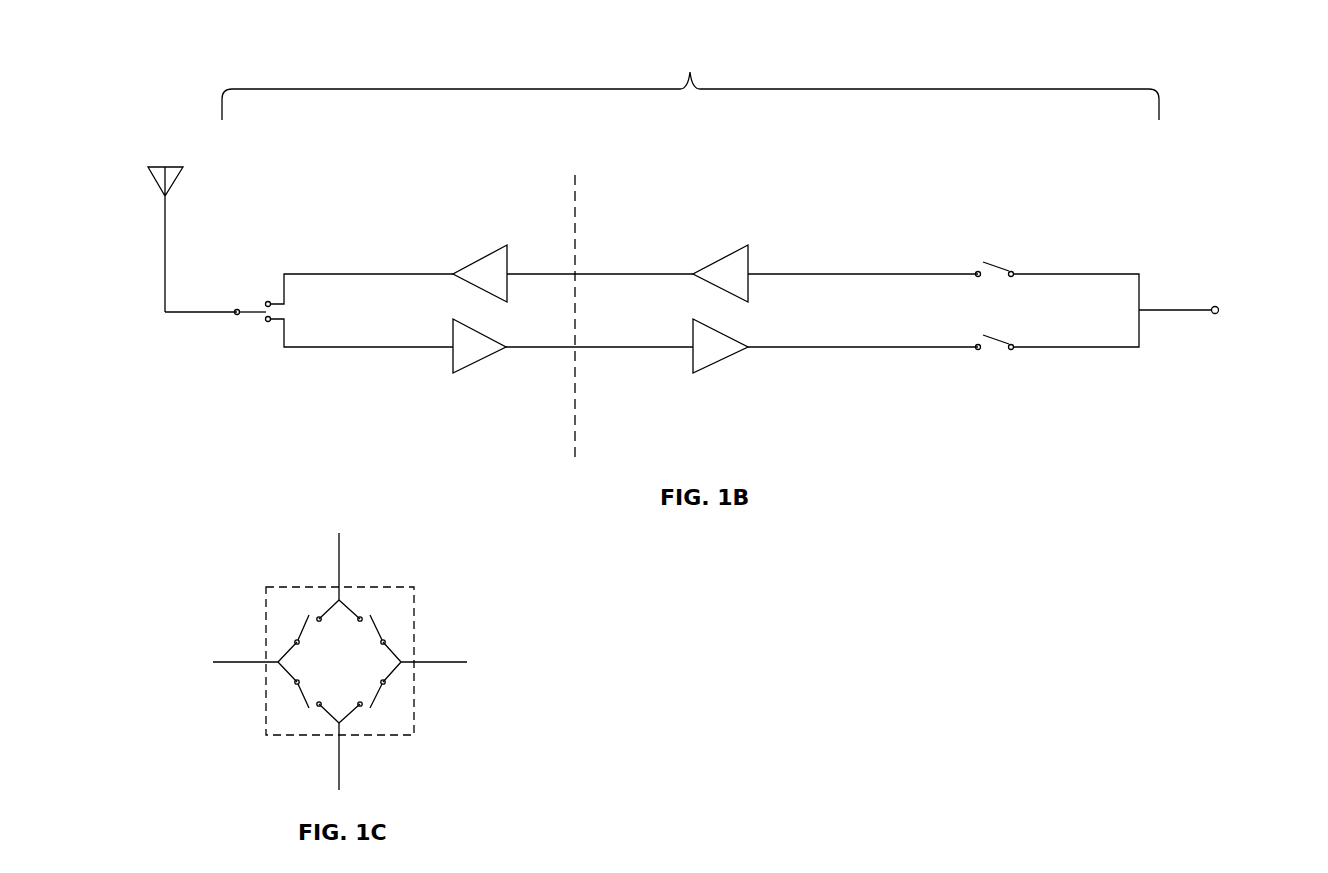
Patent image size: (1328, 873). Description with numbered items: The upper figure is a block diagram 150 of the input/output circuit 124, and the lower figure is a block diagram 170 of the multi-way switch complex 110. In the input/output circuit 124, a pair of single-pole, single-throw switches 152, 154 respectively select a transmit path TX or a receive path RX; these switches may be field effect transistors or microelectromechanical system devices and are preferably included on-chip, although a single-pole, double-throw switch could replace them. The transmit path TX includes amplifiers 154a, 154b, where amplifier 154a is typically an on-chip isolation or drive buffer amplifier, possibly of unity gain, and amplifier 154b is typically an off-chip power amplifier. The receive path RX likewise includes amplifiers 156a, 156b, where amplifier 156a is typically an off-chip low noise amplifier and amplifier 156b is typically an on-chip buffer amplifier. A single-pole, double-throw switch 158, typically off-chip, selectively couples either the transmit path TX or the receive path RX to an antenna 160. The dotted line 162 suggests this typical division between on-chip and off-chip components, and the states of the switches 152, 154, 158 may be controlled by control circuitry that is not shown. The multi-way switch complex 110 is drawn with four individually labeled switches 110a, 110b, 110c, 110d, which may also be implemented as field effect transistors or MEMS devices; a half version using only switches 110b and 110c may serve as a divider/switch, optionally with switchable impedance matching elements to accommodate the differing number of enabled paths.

In FIG. 1B, the block diagram 150 is at (717, 241).
In FIG. 1B, the input/output circuit 124 is at (690, 79).
In FIG. 1B, the antenna 160 is at (188, 183).
In FIG. 1B, the single-pole, double-throw switch 158 is at (307, 292).
In FIG. 1B, the amplifier 154b is at (478, 250).
In FIG. 1B, the amplifier 154a is at (745, 240).
In FIG. 1B, the amplifier 156a is at (480, 372).
In FIG. 1B, the amplifier 156b is at (695, 382).
In FIG. 1B, the dotted line 162 is at (575, 199).
In FIG. 1B, the single-pole, single-throw switch 152 is at (1008, 255).
In FIG. 1B, the single-pole, single-throw switch 154 is at (1006, 362).
In FIG. 1C, the block diagram 170 is at (361, 646).
In FIG. 1C, the multi-way switch complex 110 is at (361, 639).
In FIG. 1C, the switch 110a is at (385, 628).
In FIG. 1C, the switch 110b is at (385, 696).
In FIG. 1C, the switch 110c is at (290, 696).
In FIG. 1C, the switch 110d is at (290, 628).